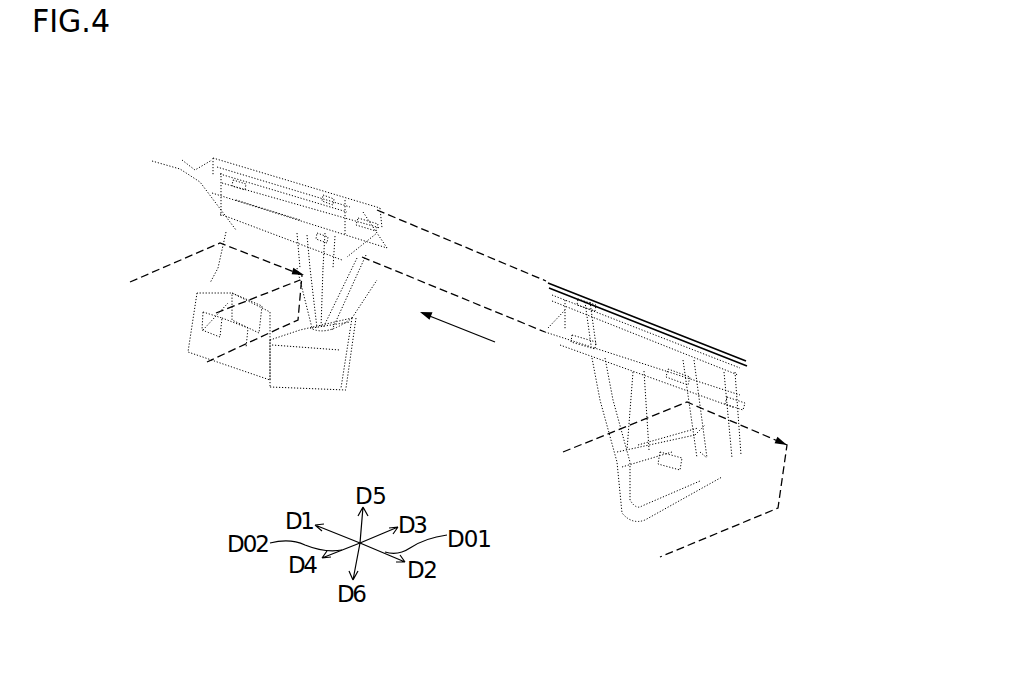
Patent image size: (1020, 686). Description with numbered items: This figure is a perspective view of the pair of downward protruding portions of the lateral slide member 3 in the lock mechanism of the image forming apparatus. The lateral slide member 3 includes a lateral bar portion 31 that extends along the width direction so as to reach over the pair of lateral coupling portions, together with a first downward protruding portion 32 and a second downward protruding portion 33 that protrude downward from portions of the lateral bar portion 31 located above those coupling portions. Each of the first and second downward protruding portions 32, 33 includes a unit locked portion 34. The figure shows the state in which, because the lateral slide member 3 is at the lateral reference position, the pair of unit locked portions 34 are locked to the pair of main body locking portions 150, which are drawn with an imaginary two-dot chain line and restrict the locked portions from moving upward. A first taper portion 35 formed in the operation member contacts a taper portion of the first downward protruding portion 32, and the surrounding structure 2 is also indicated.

The frame assembly 2 is at (269, 119).
The lateral slide member 3 is at (576, 202).
The lateral bar portion 31 is at (566, 283).
The first downward protruding portion 32 is at (366, 371).
The second downward protruding portion 33 is at (580, 417).
The unit locked portion 34 is at (220, 305).
The first taper portion 35 is at (319, 372).
The main body locking portion 150 is at (182, 260).